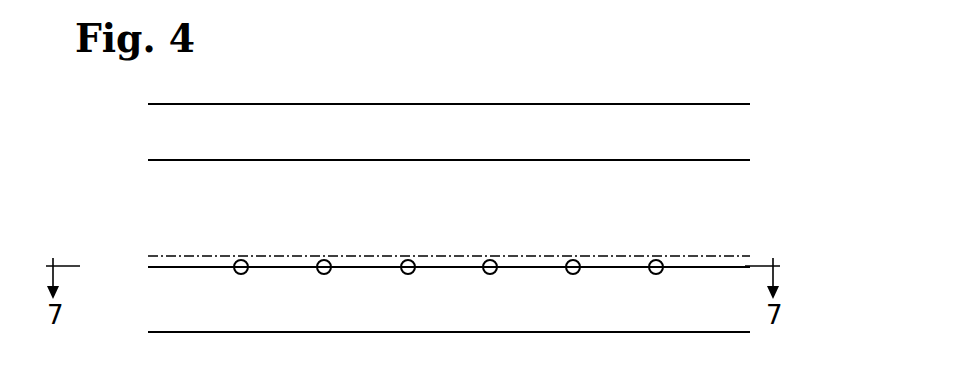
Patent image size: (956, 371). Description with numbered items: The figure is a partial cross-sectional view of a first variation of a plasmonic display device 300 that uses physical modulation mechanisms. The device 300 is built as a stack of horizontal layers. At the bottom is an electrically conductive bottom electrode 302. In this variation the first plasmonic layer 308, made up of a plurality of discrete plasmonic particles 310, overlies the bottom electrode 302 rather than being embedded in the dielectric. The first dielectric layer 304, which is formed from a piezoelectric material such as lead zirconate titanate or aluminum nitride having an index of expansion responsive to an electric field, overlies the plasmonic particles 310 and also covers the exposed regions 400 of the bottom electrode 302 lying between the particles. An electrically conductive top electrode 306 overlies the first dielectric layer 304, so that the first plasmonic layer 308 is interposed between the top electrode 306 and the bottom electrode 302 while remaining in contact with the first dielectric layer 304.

The device 300 is at (433, 188).
The bottom electrode 302 is at (472, 316).
The first dielectric layer 304 is at (472, 207).
The top electrode 306 is at (472, 144).
The first plasmonic layer 308 is at (152, 267).
The plasmonic particles 310 is at (316, 265).
The exposed regions 400 is at (430, 258).